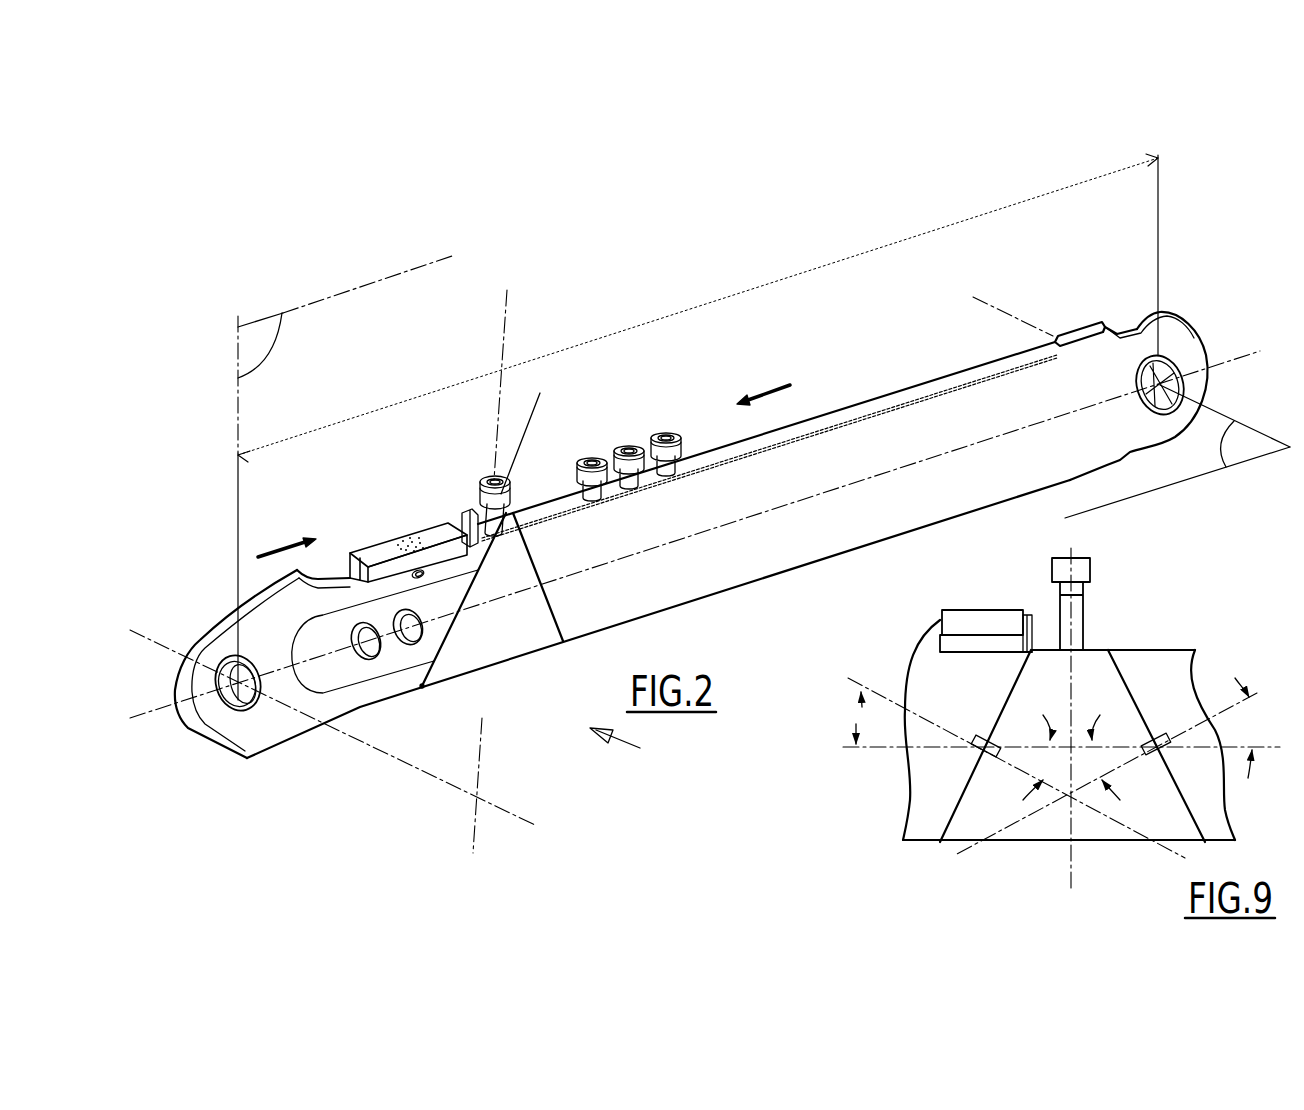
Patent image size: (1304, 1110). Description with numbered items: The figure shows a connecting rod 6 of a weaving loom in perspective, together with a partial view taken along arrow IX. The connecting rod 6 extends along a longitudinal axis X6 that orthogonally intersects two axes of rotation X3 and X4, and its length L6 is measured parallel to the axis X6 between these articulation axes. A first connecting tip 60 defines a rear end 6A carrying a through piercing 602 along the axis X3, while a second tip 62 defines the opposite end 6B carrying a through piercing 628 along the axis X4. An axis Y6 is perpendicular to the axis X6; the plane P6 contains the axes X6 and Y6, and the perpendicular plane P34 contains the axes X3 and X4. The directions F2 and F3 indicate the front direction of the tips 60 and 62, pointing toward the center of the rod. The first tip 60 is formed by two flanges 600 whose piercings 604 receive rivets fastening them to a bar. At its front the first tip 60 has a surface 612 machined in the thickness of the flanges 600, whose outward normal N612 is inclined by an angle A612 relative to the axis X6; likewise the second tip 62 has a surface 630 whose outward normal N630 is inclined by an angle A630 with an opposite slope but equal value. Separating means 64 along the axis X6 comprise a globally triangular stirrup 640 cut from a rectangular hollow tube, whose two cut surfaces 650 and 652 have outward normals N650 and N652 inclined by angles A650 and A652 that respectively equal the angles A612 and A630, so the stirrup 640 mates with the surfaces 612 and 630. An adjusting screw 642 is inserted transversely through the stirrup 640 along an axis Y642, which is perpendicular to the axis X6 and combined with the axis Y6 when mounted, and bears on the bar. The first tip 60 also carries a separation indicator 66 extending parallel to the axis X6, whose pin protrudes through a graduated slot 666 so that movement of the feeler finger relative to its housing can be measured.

In FIG. 2, the connecting rod 6 is at (617, 398).
In FIG. 2, the first connecting tip 60 is at (326, 749).
In FIG. 2, the second tip 62 is at (937, 352).
In FIG. 2, the end of the connecting rod 6A is at (186, 738).
In FIG. 2, the end of the connecting rod 6B is at (1205, 334).
In FIG. 2, the flanges 600 is at (252, 640).
In FIG. 2, the through piercing 602 is at (247, 698).
In FIG. 2, the piercings 604 is at (403, 648).
In FIG. 2, the surface 612 is at (455, 624).
In FIG. 9, the surface 612 is at (985, 808).
In FIG. 2, the through piercing 628 is at (1153, 388).
In FIG. 2, the surface 630 is at (548, 608).
In FIG. 9, the surface 630 is at (1143, 818).
In FIG. 2, the stirrup 640 is at (510, 613).
In FIG. 9, the stirrup 640 is at (1052, 827).
In FIG. 2, the adjusting screw 642 is at (491, 477).
In FIG. 9, the adjusting screw 642 is at (1080, 568).
In FIG. 2, the cut surface 650 is at (438, 644).
In FIG. 9, the cut surface 650 is at (957, 768).
In FIG. 2, the cut surface 652 is at (550, 592).
In FIG. 9, the cut surface 652 is at (1172, 765).
In FIG. 2, the separating means 64 is at (466, 488).
In FIG. 9, the separating means 64 is at (1027, 633).
In FIG. 2, the separation indicator 66 is at (418, 506).
In FIG. 9, the separation indicator 66 is at (986, 631).
In FIG. 2, the graduated slot 666 is at (397, 538).
In FIG. 2, the longitudinal axis X6 is at (695, 522).
In FIG. 9, the longitudinal axis X6 is at (1050, 746).
In FIG. 2, the axis of rotation X3 is at (344, 730).
In FIG. 2, the axis of rotation X4 is at (1001, 307).
In FIG. 2, the axis Y6 is at (465, 785).
In FIG. 2, the axis of the screw Y642 is at (525, 388).
In FIG. 9, the axis of the screw Y642 is at (1054, 709).
In FIG. 2, the plane P6 is at (346, 477).
In FIG. 2, the plane P34 is at (1177, 451).
In FIG. 2, the length of the connecting rod L6 is at (698, 308).
In FIG. 2, the front direction F2 is at (287, 538).
In FIG. 2, the front direction F3 is at (764, 388).
In FIG. 2, the arrow IX is at (615, 750).
In FIG. 9, the normal N650 is at (994, 756).
In FIG. 9, the normal N652 is at (1126, 766).
In FIG. 9, the normal N612 is at (1018, 757).
In FIG. 9, the normal N630 is at (1133, 757).
In FIG. 9, the incline angle A650 is at (862, 718).
In FIG. 9, the incline angle A652 is at (1256, 728).
In FIG. 9, the angle A612 is at (1046, 757).
In FIG. 9, the angle A630 is at (1098, 757).